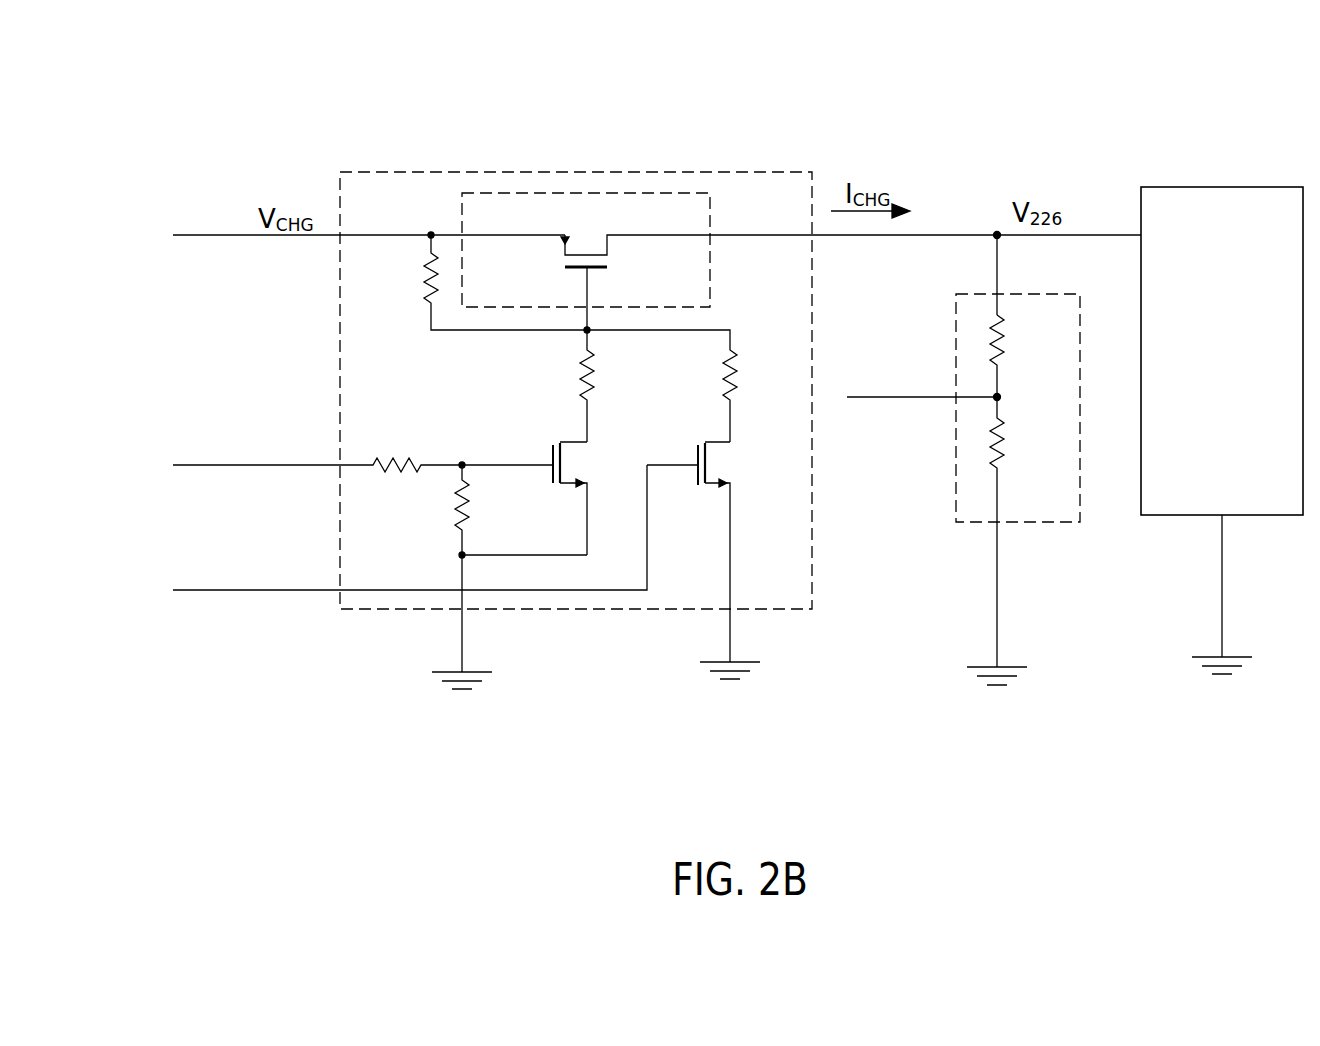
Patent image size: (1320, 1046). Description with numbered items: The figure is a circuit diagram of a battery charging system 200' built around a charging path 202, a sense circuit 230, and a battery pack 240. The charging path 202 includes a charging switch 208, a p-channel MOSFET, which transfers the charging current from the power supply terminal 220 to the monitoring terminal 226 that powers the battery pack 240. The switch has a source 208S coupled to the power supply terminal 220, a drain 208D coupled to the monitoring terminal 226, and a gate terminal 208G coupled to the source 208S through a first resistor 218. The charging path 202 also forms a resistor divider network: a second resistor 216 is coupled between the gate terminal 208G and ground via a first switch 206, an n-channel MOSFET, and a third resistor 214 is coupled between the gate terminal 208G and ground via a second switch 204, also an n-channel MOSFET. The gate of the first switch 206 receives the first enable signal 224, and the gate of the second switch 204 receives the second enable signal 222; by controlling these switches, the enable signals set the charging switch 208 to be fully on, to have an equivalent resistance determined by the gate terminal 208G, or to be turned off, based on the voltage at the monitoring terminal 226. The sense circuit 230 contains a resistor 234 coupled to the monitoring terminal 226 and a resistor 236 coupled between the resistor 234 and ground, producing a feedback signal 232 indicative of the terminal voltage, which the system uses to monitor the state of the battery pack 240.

The battery charging system 200' is at (165, 72).
The charging path 202 is at (620, 172).
The second switch 204 is at (553, 447).
The first switch 206 is at (698, 447).
The charging switch 208 is at (729, 261).
The source 208S is at (556, 232).
The drain 208D is at (643, 232).
The gate terminal 208G is at (598, 269).
The third resistor 214 is at (600, 361).
The second resistor 216 is at (746, 361).
The first resistor 218 is at (425, 302).
The power supply terminal 220 is at (237, 235).
The second enable signal 222 is at (237, 465).
The first enable signal 224 is at (237, 590).
The monitoring terminal 226 is at (996, 231).
The sense circuit 230 is at (993, 480).
The feedback signal 232 is at (908, 397).
The resistor 234 is at (1009, 338).
The resistor 236 is at (1009, 442).
The battery pack 240 is at (1200, 403).